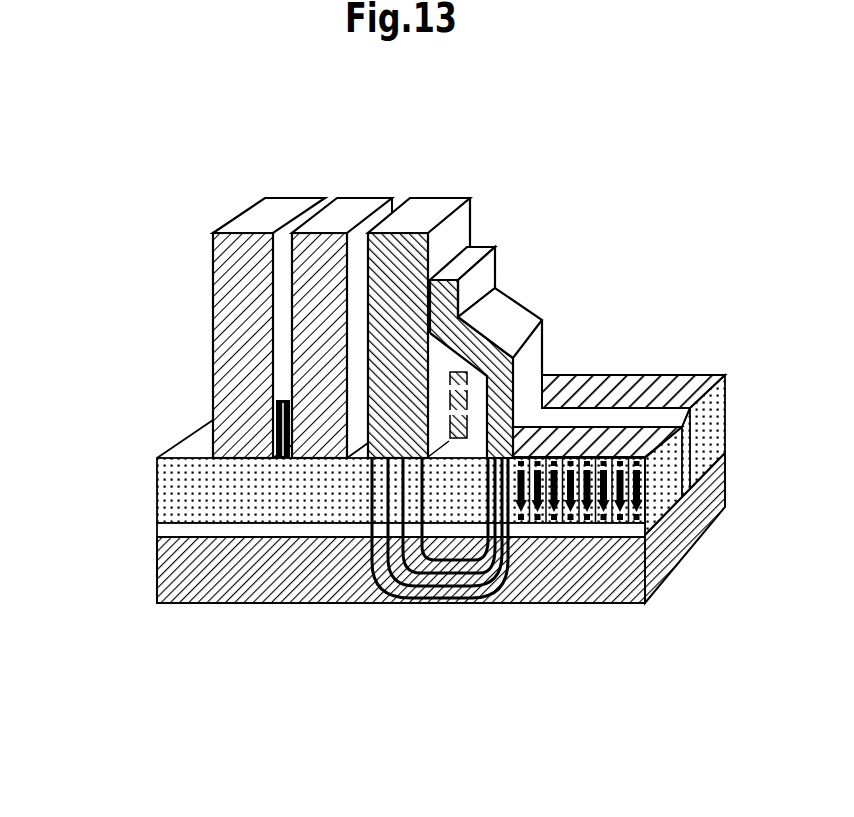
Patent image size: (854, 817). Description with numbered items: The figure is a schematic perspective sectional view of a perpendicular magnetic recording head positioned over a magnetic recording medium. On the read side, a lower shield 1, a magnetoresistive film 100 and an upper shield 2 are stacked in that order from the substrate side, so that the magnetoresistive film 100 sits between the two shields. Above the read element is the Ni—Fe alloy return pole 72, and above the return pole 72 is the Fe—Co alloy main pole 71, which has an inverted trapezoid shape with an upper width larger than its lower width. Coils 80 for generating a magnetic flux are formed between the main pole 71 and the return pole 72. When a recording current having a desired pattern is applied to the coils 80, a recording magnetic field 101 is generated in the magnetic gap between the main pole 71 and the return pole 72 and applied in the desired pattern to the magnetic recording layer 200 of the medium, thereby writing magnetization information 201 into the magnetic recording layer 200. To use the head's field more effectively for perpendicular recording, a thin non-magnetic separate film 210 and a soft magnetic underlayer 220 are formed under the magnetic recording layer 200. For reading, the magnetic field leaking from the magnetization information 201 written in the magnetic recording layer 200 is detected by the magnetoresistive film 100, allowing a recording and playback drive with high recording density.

The lower shield 1 is at (268, 208).
The upper shield 2 is at (347, 208).
The return pole 72 is at (422, 217).
The main pole 71 is at (482, 275).
The coils 80 is at (532, 313).
The magnetoresistive film 100 is at (278, 437).
The recording magnetic field 101 is at (447, 603).
The magnetic recording layer 200 is at (213, 495).
The magnetization information 201 is at (533, 533).
The non-magnetic separate film 210 is at (288, 532).
The soft magnetic underlayer 220 is at (335, 603).